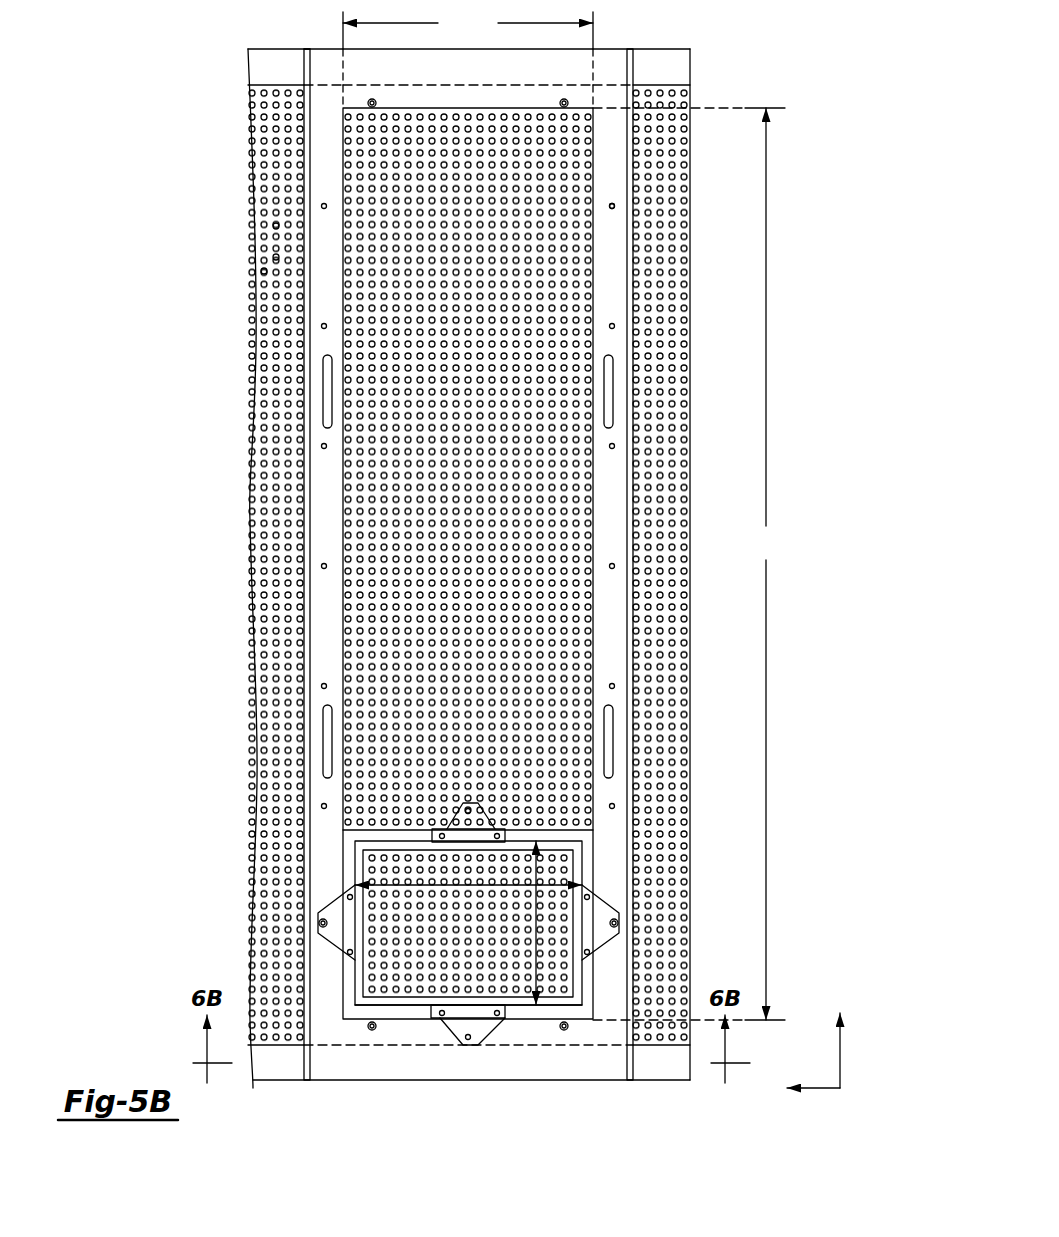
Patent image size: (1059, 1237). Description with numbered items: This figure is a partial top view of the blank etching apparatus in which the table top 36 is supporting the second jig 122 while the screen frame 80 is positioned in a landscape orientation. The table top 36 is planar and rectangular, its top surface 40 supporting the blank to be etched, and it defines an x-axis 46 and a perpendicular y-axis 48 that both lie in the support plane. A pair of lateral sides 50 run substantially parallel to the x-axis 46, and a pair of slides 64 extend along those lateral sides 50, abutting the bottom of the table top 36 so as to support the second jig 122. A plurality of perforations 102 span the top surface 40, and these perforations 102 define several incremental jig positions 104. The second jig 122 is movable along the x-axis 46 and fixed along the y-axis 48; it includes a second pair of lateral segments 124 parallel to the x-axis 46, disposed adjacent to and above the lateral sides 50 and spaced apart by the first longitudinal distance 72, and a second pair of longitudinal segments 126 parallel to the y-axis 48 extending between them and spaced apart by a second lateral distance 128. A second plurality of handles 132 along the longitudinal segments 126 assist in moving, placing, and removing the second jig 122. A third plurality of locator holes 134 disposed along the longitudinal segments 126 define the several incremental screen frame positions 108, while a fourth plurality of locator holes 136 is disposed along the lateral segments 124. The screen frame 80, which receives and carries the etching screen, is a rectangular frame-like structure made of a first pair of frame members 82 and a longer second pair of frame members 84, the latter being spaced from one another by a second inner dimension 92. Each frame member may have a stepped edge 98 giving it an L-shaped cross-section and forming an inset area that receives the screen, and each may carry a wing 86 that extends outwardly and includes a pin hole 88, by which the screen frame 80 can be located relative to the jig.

The table top 36 is at (215, 184).
The top surface 40 is at (254, 127).
The x-axis 46 is at (822, 1088).
The y-axis 48 is at (840, 1062).
The lateral sides 50 is at (679, 82).
The slides 64 is at (648, 60).
The first longitudinal distance 72 is at (764, 564).
The screen frame 80 is at (342, 868).
The first pair of frame members 82 is at (350, 1000).
The second pair of frame members 84 is at (370, 848).
The wing 86 is at (462, 821).
The pin hole 88 is at (471, 811).
The second inner dimension 92 is at (533, 958).
The stepped edge 98 is at (520, 997).
The perforations 102 is at (273, 226).
The incremental jig positions 104 is at (381, 99).
The incremental screen frame positions 108 is at (617, 212).
The second jig 122 is at (301, 46).
The second pair of lateral segments 124 is at (316, 62).
The second pair of longitudinal segments 126 is at (320, 418).
The second lateral distance 128 is at (468, 30).
The second plurality of handles 132 is at (322, 372).
The third plurality of locator holes 134 is at (324, 203).
The fourth plurality of locator holes 136 is at (371, 99).